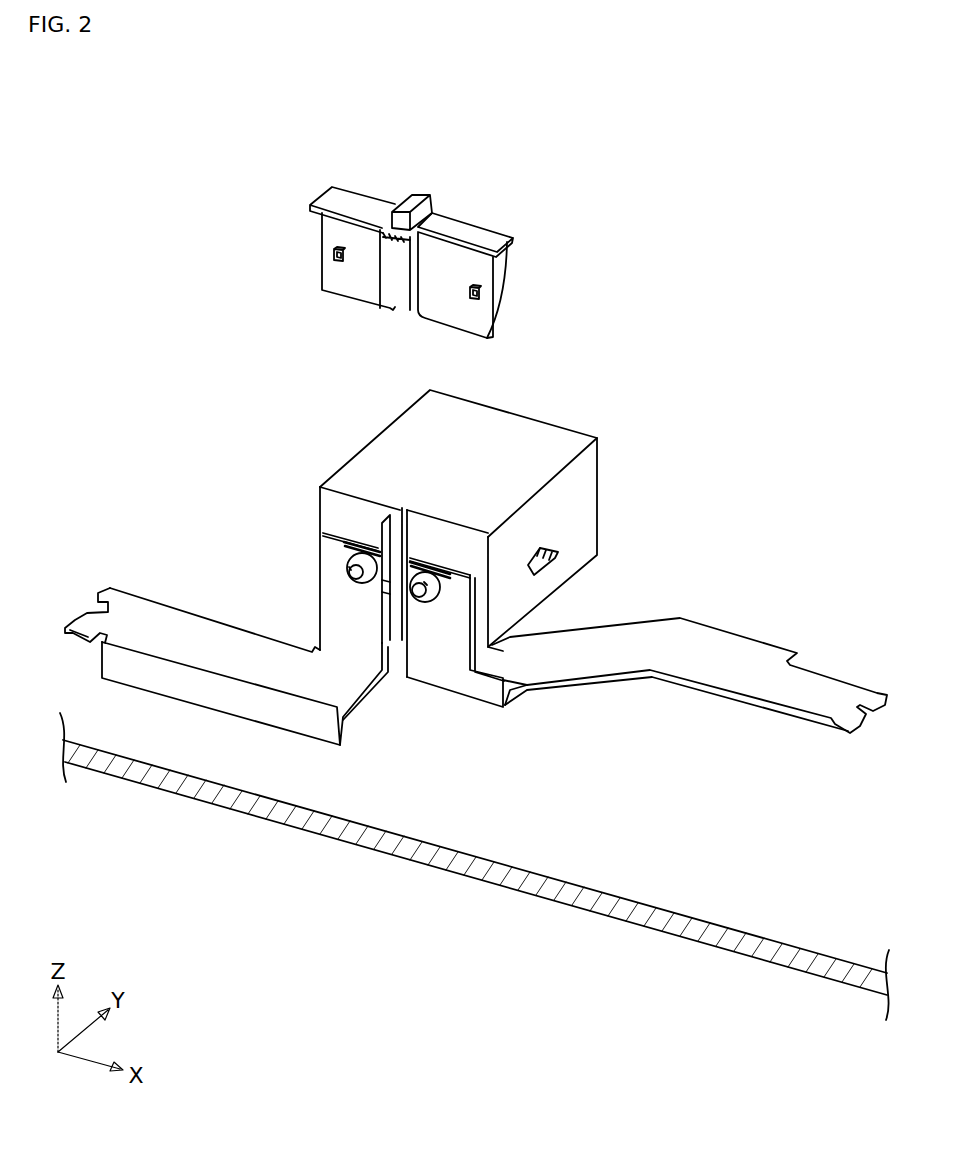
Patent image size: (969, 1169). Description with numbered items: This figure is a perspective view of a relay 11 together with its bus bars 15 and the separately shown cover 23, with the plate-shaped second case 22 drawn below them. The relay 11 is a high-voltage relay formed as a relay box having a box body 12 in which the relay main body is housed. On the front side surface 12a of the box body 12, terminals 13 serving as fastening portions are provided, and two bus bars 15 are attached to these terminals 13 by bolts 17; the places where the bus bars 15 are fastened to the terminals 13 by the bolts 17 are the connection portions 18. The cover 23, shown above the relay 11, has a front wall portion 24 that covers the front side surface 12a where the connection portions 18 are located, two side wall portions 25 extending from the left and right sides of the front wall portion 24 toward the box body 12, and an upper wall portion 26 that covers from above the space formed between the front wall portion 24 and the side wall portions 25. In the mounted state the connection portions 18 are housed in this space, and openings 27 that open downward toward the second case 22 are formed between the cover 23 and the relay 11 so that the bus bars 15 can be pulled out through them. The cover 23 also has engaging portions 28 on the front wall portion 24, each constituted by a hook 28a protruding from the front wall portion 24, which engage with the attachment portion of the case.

The relay 11 is at (538, 448).
The box body 12 is at (517, 427).
The front side surface 12a is at (338, 510).
The terminal 13 is at (370, 543).
The bus bar 15 is at (168, 622).
The bolt 17 is at (447, 580).
The connection portion 18 is at (357, 572).
The second case 22 is at (222, 797).
The cover 23 is at (480, 228).
The front wall portion 24 is at (447, 305).
The side wall portion 25 is at (503, 268).
The upper wall portion 26 is at (360, 200).
The opening 27 is at (350, 303).
The engaging portion 28 is at (333, 257).
The hook 28a is at (407, 273).